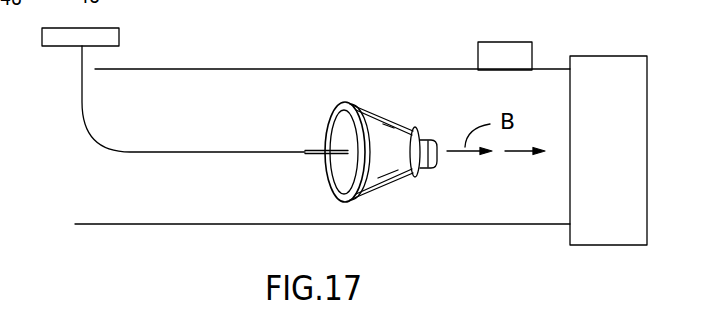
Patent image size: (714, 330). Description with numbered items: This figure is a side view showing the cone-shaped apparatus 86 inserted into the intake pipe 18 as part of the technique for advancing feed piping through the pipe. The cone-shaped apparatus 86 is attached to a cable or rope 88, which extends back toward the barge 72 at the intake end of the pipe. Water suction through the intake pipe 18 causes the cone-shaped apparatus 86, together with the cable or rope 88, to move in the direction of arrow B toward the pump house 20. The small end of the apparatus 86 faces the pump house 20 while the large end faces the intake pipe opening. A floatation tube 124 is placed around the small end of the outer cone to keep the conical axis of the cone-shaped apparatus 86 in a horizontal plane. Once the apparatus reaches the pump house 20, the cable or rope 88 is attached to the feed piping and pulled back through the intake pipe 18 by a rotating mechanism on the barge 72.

The intake pipe 18 is at (150, 203).
The pump house 20 is at (609, 232).
The barge 72 is at (119, 36).
The cable or rope 88 is at (152, 150).
The cone-shaped apparatus 86 is at (386, 105).
The floatation tube 124 is at (414, 130).